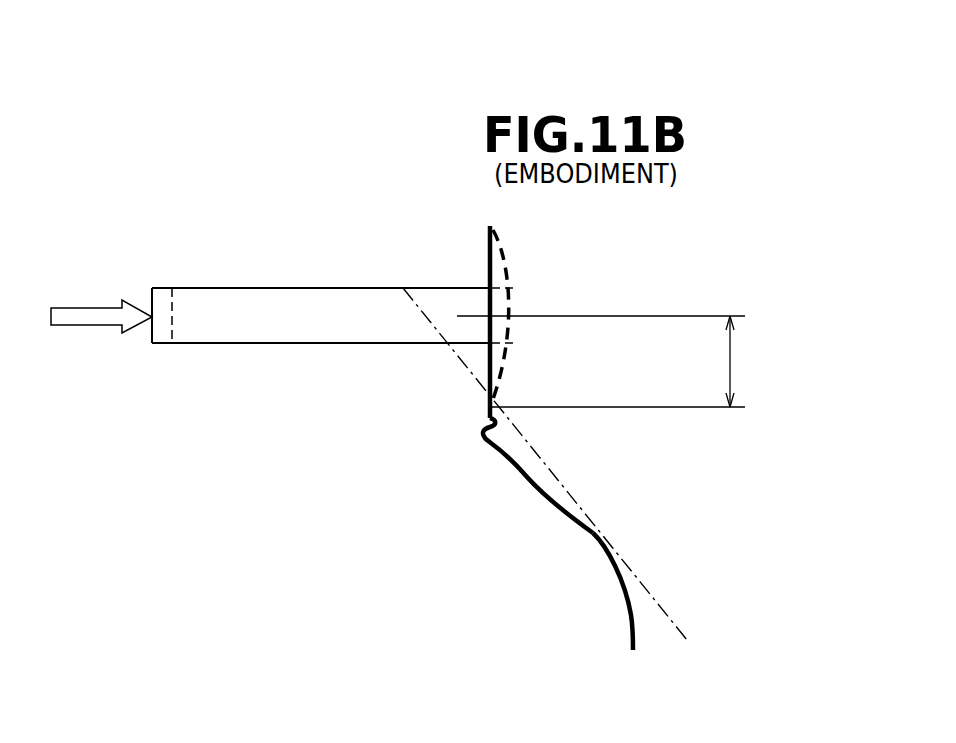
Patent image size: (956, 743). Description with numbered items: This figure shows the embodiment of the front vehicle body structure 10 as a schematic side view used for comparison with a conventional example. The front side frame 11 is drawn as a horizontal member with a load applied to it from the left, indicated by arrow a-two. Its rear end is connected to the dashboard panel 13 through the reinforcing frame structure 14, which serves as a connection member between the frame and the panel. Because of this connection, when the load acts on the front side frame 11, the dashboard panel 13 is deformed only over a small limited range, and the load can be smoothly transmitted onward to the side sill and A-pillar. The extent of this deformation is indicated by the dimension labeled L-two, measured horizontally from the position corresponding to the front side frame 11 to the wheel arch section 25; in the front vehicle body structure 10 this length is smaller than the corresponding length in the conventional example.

The front vehicle body structure 10 is at (297, 111).
The front side frame 11 is at (306, 287).
The dashboard panel 13 is at (477, 376).
The reinforcing frame structure 14 is at (545, 462).
The wheel arch section 25 is at (607, 562).